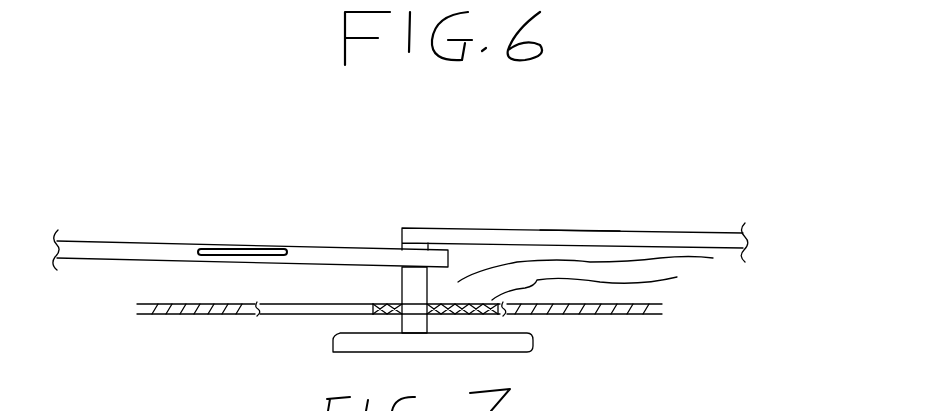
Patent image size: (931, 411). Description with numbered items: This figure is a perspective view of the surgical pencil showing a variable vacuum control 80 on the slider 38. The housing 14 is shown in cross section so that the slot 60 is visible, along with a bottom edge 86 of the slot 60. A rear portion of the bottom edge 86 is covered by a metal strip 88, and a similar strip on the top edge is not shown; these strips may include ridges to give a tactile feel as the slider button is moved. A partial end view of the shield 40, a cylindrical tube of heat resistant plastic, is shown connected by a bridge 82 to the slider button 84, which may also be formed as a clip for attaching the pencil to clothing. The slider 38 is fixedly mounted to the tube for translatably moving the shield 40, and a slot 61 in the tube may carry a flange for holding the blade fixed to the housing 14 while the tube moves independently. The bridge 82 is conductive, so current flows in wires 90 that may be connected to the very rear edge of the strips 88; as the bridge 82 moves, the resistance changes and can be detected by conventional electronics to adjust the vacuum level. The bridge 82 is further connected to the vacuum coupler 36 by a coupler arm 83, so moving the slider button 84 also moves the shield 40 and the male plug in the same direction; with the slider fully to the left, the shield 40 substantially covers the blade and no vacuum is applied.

The housing 14 is at (202, 320).
The vacuum coupler 36 is at (790, 259).
The slider 38 is at (540, 185).
The shield 40 is at (223, 241).
The slot 60 is at (303, 320).
The slot in the tube 61 is at (228, 262).
The variable vacuum control 80 is at (322, 186).
The bridge 82 is at (402, 281).
The coupler arm 83 is at (560, 232).
The slider button 84 is at (517, 353).
The bottom edge 86 is at (317, 304).
The metal strip 88 is at (462, 294).
The wires 90 is at (612, 246).